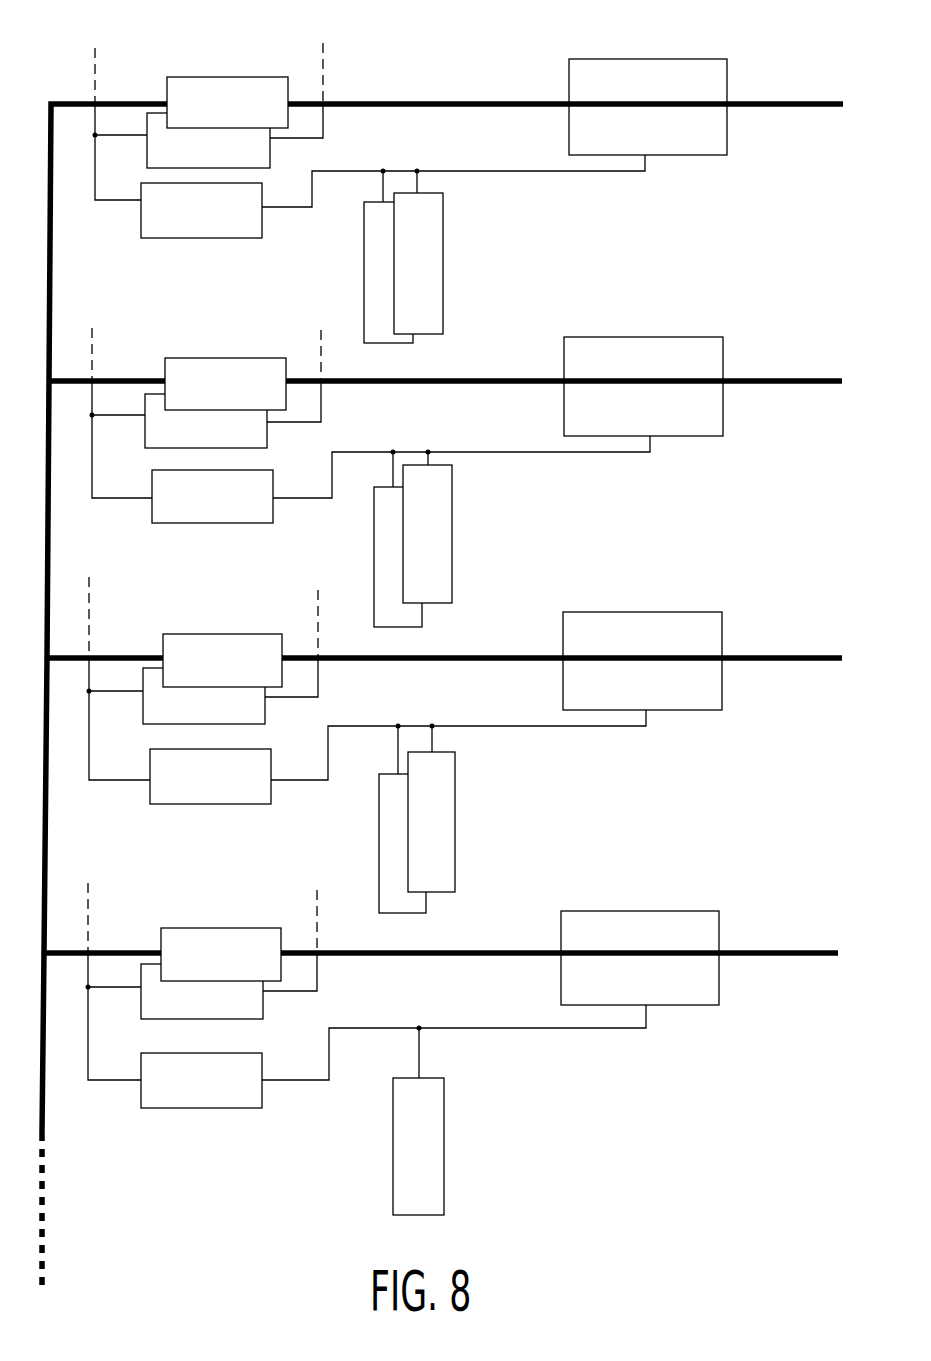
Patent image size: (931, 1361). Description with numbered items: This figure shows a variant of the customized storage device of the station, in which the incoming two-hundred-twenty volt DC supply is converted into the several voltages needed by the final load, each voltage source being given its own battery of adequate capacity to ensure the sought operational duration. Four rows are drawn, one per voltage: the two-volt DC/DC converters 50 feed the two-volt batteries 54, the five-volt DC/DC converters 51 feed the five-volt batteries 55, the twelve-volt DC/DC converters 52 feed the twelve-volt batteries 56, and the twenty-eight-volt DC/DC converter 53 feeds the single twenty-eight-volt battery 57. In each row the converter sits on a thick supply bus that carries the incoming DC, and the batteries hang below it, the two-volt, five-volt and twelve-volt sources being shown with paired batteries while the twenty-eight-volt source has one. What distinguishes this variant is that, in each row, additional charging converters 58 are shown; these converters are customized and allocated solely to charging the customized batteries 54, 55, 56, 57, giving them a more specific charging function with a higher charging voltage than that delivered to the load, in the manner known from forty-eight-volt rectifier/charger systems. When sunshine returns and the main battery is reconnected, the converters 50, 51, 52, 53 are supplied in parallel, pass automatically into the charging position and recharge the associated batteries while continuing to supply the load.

The 220/2 V DC/DC converter 50 is at (222, 66).
The 220/5 V DC/DC converter 51 is at (230, 346).
The 220/12 V DC/DC converter 52 is at (222, 621).
The 220/28 V DC/DC converter 53 is at (222, 914).
The 2 V batteries 54 is at (455, 260).
The 5 V batteries 55 is at (462, 530).
The 12 V batteries 56 is at (466, 818).
The 28 V battery 57 is at (428, 1168).
The charging converter 58 is at (172, 228).